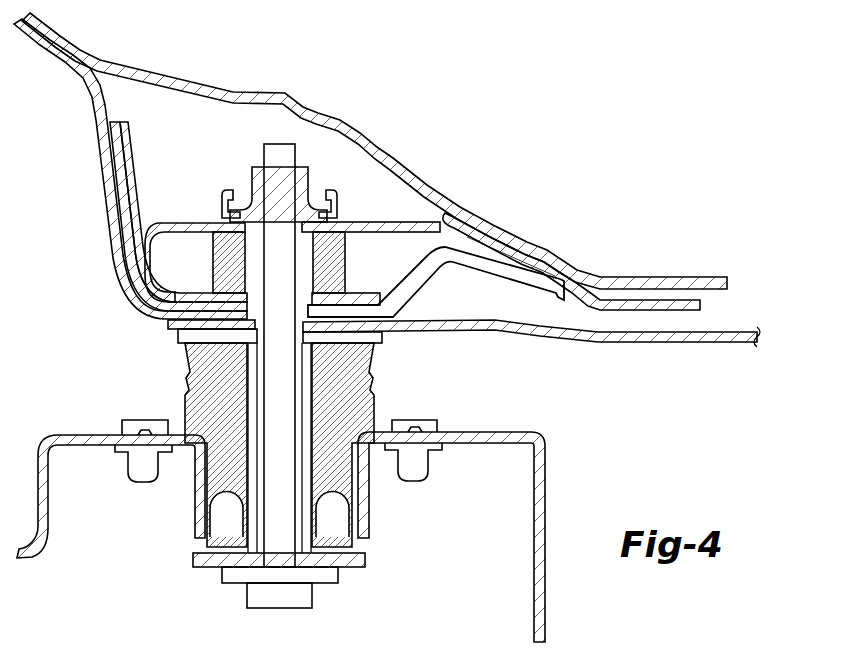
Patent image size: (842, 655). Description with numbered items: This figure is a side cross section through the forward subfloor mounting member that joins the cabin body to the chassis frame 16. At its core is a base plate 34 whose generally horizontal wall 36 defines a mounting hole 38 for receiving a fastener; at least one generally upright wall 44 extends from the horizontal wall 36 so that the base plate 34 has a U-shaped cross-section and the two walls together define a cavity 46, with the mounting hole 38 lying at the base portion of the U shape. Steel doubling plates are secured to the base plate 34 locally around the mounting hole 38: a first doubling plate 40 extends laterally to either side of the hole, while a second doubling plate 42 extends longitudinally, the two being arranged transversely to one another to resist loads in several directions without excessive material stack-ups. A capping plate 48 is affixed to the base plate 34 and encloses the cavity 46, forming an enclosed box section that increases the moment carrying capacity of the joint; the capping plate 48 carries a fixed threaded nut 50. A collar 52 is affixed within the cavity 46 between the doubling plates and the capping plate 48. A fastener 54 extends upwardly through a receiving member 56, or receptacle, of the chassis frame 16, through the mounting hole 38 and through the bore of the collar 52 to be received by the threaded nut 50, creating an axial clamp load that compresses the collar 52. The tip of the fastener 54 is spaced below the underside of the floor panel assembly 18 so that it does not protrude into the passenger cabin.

The chassis frame 16 is at (547, 478).
The floor panel assembly 18 is at (268, 92).
The base plate 34 is at (441, 240).
The horizontal wall 36 is at (383, 320).
The mounting hole 38 is at (249, 304).
The first doubling plate 40 is at (110, 121).
The second doubling plate 42 is at (414, 264).
The upright wall 44 is at (93, 161).
The cavity 46 is at (160, 248).
The capping plate 48 is at (373, 222).
The threaded nut 50 is at (214, 210).
The collar 52 is at (218, 272).
The fastener 54 is at (278, 145).
The receiving member 56 is at (373, 353).